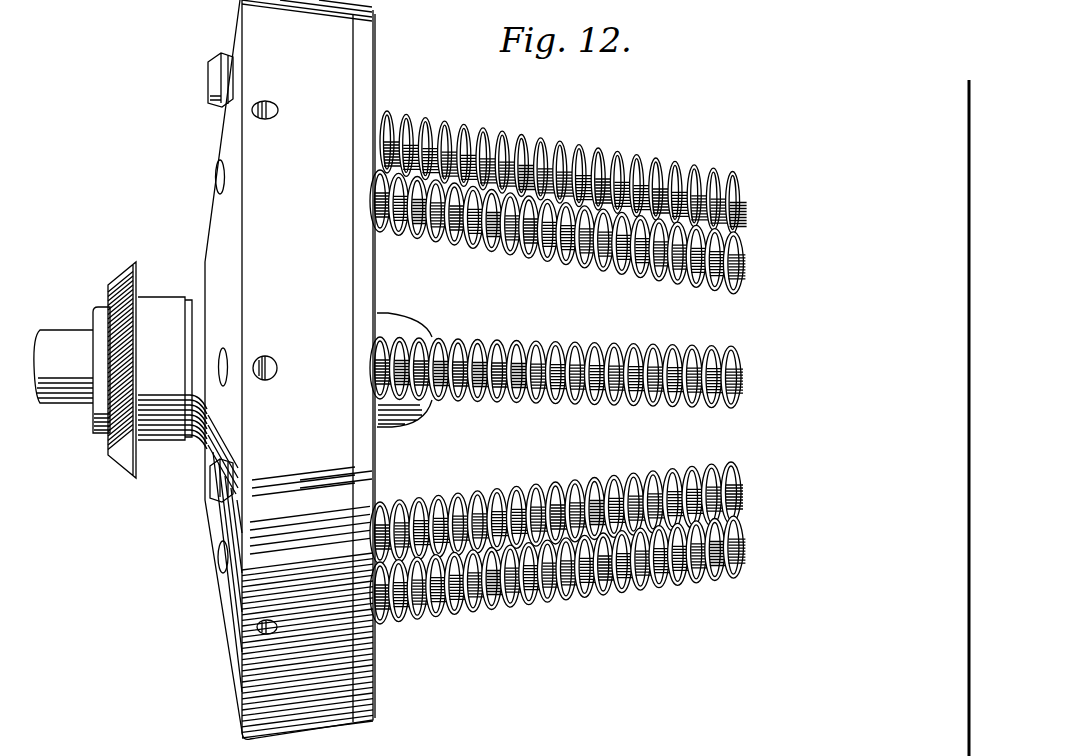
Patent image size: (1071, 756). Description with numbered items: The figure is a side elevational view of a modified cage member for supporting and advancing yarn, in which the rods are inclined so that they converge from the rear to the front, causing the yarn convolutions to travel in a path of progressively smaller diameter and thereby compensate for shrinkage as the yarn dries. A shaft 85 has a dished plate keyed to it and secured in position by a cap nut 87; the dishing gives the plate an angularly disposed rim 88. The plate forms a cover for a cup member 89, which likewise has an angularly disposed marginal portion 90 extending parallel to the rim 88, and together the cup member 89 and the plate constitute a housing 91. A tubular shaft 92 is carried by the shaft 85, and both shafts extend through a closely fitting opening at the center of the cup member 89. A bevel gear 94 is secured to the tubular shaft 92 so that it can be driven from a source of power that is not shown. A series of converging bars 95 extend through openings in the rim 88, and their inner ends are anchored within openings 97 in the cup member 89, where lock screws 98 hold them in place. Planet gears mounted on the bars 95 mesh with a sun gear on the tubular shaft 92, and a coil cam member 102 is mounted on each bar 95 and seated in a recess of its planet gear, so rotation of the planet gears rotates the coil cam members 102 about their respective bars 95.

The shaft 85 is at (62, 403).
The cap nut 87 is at (390, 427).
The rim 88 is at (375, 698).
The cup member 89 is at (212, 442).
The marginal portion 90 is at (232, 678).
The housing 91 is at (218, 617).
The tubular shaft 92 is at (180, 317).
The bevel gear 94 is at (125, 470).
The converging bars 95 is at (216, 175).
The openings 97 is at (218, 153).
The lock screws 98 is at (277, 362).
The coil cam member 102 is at (523, 136).